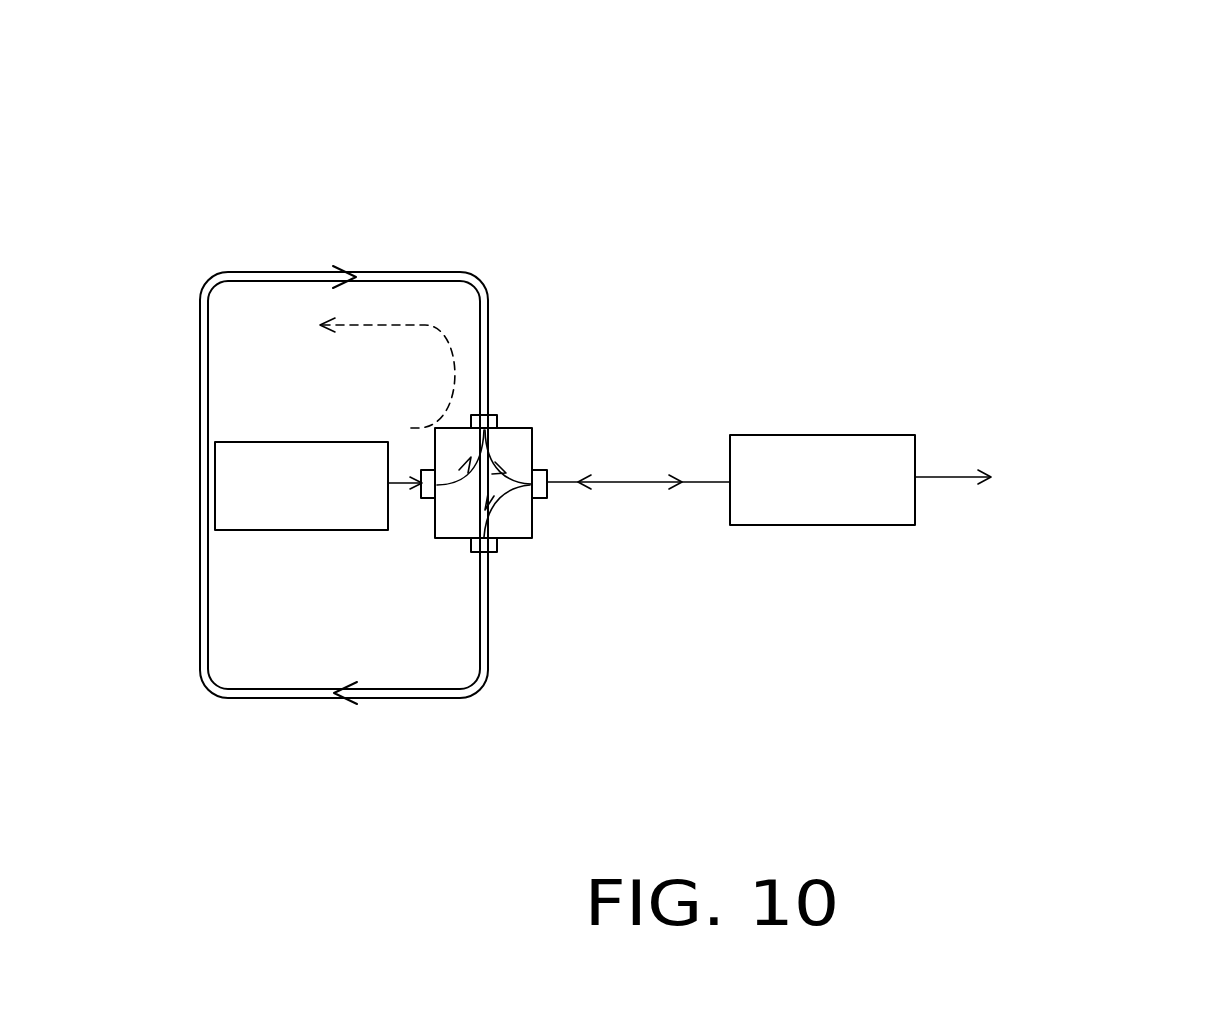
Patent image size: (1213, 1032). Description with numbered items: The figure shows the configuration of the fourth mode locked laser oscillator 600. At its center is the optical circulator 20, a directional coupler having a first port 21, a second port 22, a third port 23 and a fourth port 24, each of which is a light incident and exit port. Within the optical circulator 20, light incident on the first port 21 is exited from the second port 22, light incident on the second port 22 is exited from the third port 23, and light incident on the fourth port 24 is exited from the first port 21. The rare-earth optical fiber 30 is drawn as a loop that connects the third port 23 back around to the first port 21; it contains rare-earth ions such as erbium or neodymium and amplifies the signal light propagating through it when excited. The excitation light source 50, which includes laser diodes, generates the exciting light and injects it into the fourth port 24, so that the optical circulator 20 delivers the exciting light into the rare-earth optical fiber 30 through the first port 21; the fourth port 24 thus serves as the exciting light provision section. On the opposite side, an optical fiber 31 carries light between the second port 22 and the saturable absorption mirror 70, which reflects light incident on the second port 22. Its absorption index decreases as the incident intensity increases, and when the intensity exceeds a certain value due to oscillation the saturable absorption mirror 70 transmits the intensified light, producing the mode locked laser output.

The fourth mode locked laser oscillator 600 is at (218, 57).
The rare-earth optical fiber 30 is at (200, 483).
The excitation light source 50 is at (303, 442).
The optical circulator 20 is at (430, 537).
The first port 21 is at (490, 412).
The second port 22 is at (546, 460).
The third port 23 is at (500, 555).
The fourth port 24 is at (426, 498).
The optical fiber 31 is at (640, 482).
The saturable absorption mirror 70 is at (822, 435).